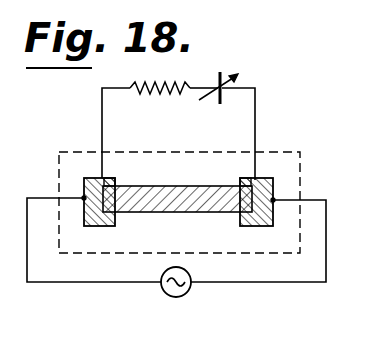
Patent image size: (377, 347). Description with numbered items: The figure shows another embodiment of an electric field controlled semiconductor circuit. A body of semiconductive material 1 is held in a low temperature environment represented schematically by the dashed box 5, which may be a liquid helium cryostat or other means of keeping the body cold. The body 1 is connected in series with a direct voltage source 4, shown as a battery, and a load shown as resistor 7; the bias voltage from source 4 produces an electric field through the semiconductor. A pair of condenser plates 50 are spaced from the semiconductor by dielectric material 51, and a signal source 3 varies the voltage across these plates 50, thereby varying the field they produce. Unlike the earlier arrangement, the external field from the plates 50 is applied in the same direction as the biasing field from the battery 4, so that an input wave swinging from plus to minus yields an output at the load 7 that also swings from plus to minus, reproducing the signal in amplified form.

The body of semiconductive material 1 is at (178, 213).
The signal source 3 is at (186, 268).
The direct voltage source 4 is at (222, 100).
The dashed box 5 is at (301, 152).
The load resistor 7 is at (153, 95).
The condenser plates 50 is at (92, 179).
The dielectric material 51 is at (112, 178).